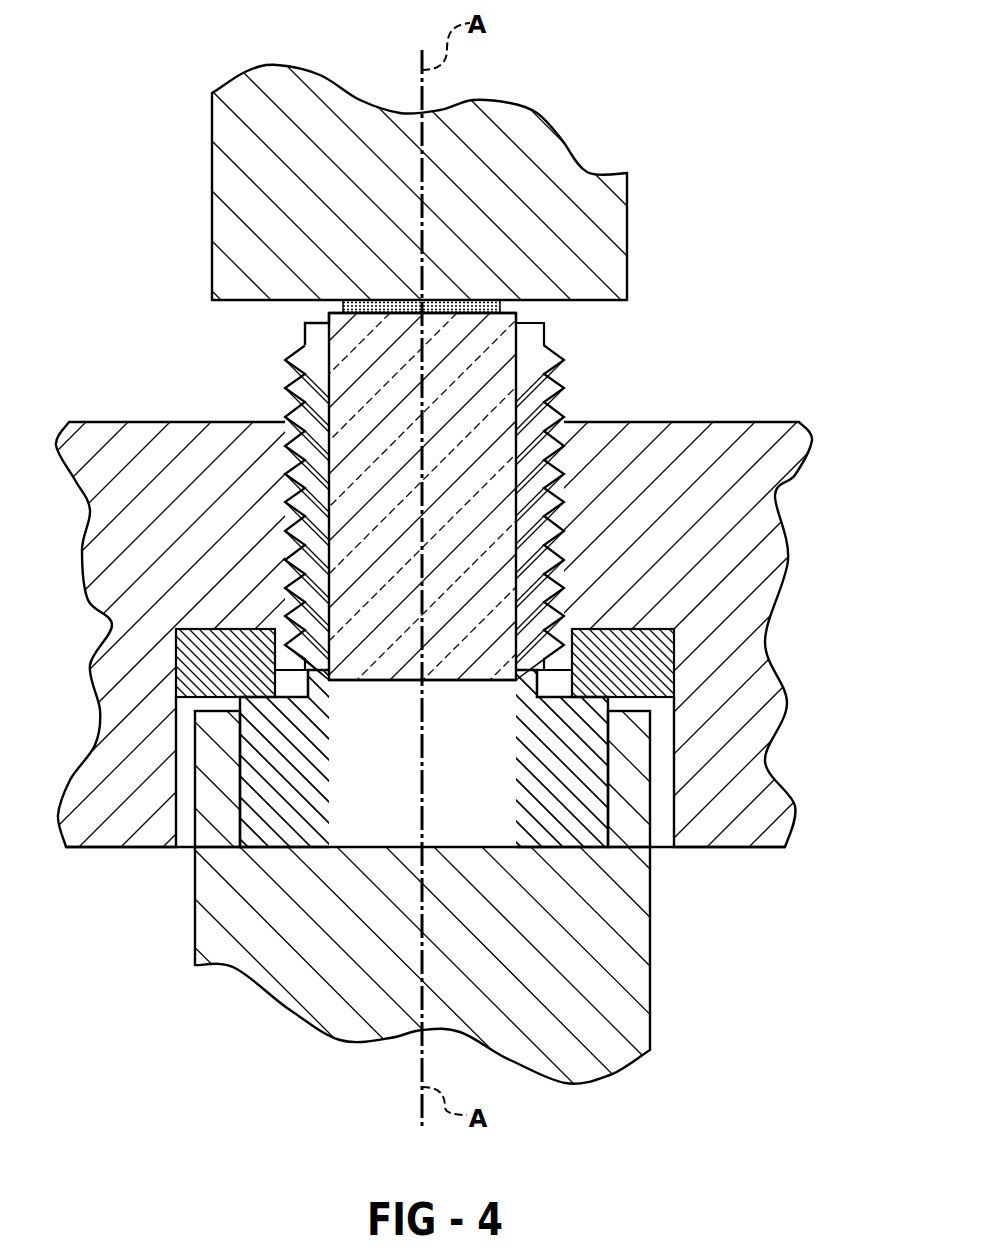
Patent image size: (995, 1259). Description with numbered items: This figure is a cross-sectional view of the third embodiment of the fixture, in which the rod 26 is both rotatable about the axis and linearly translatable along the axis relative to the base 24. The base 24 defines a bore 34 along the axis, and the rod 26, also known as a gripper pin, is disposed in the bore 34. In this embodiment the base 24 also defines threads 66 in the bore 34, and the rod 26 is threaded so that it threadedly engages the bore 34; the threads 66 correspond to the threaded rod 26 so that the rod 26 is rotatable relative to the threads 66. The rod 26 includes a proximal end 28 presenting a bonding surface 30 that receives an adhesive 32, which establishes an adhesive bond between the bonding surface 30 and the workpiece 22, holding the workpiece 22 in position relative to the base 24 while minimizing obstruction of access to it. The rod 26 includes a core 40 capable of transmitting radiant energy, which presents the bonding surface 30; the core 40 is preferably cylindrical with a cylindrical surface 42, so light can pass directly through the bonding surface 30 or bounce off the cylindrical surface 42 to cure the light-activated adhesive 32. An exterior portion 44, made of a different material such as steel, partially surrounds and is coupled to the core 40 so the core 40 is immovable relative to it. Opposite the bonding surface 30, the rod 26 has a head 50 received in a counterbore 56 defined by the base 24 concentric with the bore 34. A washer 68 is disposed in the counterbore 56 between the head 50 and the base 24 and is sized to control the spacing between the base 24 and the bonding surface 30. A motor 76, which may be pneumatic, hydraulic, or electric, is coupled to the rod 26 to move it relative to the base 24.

The workpiece 22 is at (622, 190).
The base 24 is at (723, 432).
The rod 26 is at (510, 303).
The proximal end 28 is at (327, 320).
The bonding surface 30 is at (433, 322).
The adhesive 32 is at (380, 303).
The bore 34 is at (302, 456).
The core 40 is at (437, 584).
The cylindrical surface 42 is at (518, 400).
The exterior portion 44 is at (317, 418).
The head 50 is at (573, 823).
The counterbore 56 is at (230, 793).
The threads 66 is at (560, 500).
The washer 68 is at (645, 652).
The motor 76 is at (273, 993).